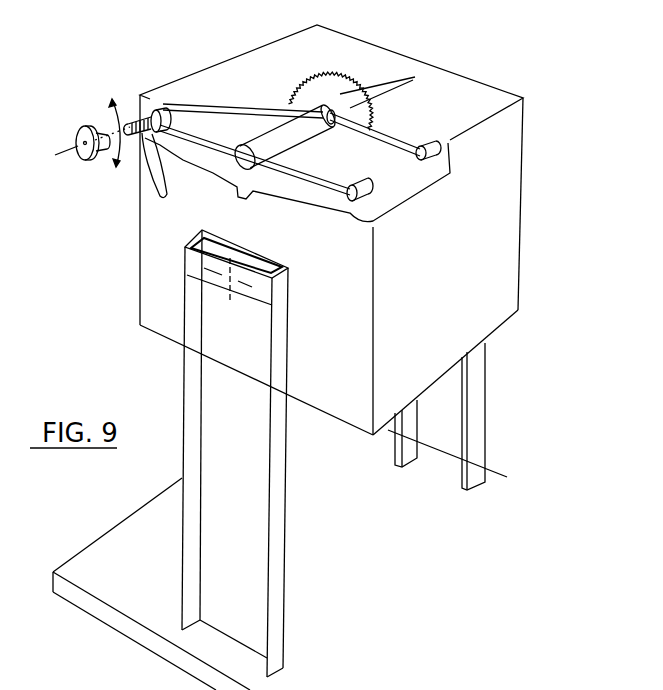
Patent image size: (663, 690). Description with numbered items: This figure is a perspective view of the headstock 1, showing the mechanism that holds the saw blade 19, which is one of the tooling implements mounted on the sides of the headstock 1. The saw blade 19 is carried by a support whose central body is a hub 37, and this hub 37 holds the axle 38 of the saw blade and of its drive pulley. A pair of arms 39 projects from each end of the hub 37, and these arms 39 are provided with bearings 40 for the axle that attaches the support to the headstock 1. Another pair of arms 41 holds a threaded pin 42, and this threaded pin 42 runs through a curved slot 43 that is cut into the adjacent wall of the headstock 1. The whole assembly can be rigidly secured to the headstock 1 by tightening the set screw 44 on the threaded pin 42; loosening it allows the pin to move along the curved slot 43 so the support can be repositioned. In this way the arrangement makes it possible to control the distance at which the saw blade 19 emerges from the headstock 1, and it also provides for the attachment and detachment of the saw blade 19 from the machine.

The headstock 1 is at (488, 100).
The saw blade 19 is at (345, 95).
The hub 37 is at (278, 137).
The axle 38 is at (250, 154).
The pair of arms 39 is at (332, 128).
The bearings 40 is at (375, 203).
The pair of arms 41 is at (222, 110).
The threaded pin 42 is at (138, 119).
The curved slot 43 is at (157, 172).
The set screw 44 is at (83, 135).